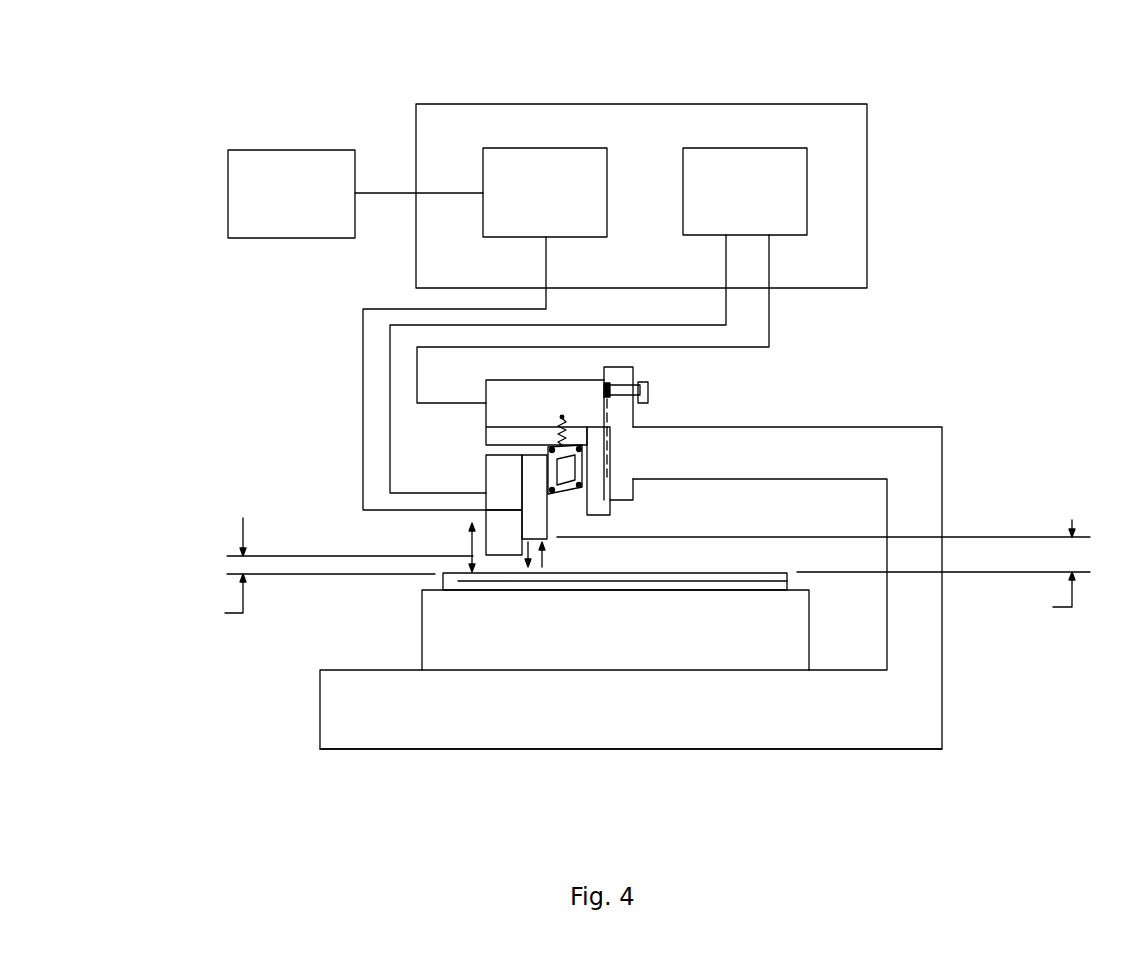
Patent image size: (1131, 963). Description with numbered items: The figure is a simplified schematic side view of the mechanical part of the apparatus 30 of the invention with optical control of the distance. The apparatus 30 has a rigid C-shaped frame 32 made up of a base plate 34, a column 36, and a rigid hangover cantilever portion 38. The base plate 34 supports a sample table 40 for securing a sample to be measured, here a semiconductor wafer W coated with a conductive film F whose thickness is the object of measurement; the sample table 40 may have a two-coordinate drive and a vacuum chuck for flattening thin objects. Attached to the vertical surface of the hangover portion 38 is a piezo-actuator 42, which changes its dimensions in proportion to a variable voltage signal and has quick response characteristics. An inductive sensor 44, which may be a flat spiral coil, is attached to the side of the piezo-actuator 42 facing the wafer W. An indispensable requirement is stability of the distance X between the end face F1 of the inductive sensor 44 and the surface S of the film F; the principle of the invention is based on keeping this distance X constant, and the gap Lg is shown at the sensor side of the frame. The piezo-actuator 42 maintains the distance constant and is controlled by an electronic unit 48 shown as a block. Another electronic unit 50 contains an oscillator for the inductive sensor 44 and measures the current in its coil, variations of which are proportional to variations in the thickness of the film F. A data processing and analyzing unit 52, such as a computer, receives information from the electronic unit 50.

The apparatus 30 is at (992, 334).
The rigid C-shaped frame 32 is at (960, 479).
The base plate 34 is at (780, 733).
The column 36 is at (943, 698).
The hangover cantilever portion 38 is at (818, 427).
The sample table 40 is at (565, 650).
The piezo-actuator 42 is at (488, 433).
The inductive sensor 44 is at (498, 478).
The electronic unit 48 is at (793, 191).
The electronic unit 50 is at (495, 165).
The data processing and analyzing unit 52 is at (258, 178).
The end face of the inductive sensor F1 is at (493, 542).
The conductive film F is at (440, 576).
The semiconductor wafer W is at (463, 590).
The surface of the film S is at (695, 574).
The distance X is at (336, 572).
The gap distance Lg is at (823, 572).